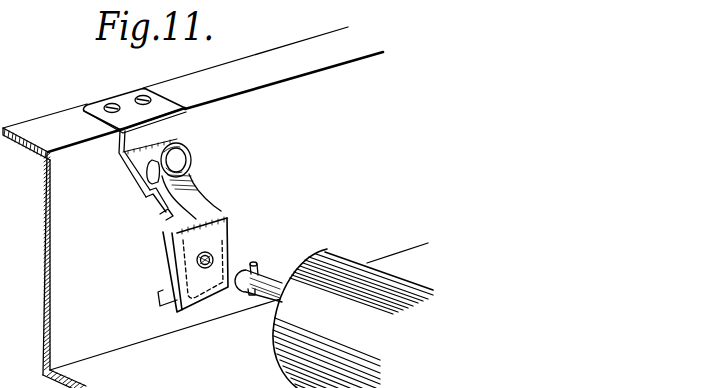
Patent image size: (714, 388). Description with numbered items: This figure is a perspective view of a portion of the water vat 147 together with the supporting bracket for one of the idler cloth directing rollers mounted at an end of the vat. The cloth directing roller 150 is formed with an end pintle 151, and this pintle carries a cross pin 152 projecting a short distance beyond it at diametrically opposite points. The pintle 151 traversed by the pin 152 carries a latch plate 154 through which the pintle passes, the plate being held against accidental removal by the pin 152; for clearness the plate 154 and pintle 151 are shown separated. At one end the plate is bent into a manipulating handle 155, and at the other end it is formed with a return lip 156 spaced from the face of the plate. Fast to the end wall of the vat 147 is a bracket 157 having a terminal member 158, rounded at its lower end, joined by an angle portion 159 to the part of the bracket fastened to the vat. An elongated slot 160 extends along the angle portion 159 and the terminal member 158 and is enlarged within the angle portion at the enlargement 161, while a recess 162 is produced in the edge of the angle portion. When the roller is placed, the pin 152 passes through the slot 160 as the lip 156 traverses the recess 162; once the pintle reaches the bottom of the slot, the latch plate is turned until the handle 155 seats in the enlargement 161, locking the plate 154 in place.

The vat 147 is at (43, 310).
The cloth directing roller 150 is at (353, 318).
The end pintle 151 is at (267, 288).
The cross pin 152 is at (253, 265).
The latch plate 154 is at (222, 233).
The manipulating handle 155 is at (173, 155).
The return lip 156 is at (155, 293).
The bracket 157 is at (127, 147).
The terminal member 158 is at (168, 263).
The angle portion 159 is at (203, 187).
The elongated slot 160 is at (162, 217).
The enlargement 161 is at (145, 175).
The recess 162 is at (153, 207).